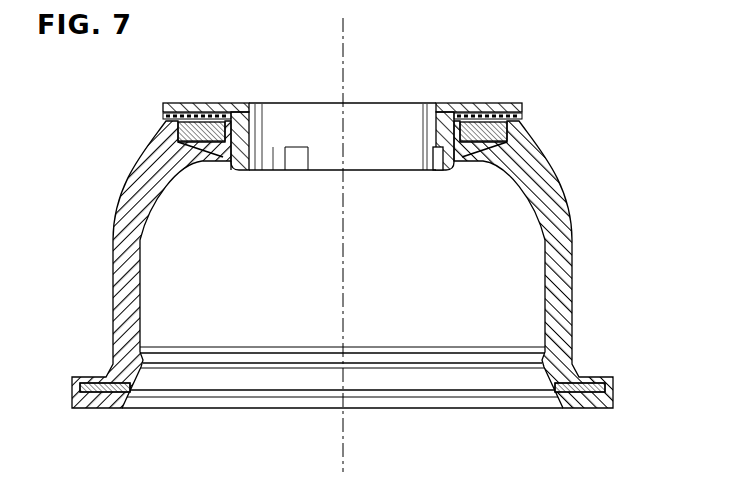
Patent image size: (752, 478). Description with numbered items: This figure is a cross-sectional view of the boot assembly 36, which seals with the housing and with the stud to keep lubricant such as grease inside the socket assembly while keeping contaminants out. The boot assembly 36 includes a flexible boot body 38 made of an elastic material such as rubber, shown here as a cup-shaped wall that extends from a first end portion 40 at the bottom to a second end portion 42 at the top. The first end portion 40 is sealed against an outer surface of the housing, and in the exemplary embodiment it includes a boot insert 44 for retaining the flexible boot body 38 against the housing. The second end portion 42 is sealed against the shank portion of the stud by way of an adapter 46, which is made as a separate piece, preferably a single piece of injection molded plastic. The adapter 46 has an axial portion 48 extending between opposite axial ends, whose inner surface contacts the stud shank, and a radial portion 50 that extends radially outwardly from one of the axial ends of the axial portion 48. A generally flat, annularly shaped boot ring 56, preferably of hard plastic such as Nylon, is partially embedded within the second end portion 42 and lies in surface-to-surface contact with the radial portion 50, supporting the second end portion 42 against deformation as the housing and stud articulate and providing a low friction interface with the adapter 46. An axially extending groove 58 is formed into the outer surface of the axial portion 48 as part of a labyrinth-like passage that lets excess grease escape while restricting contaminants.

The boot assembly 36 is at (362, 246).
The flexible boot body 38 is at (573, 252).
The first end portion 40 is at (593, 408).
The second end portion 42 is at (360, 264).
The boot insert 44 is at (593, 390).
The adapter 46 is at (302, 153).
The axial portion 48 is at (250, 140).
The radial portion 50 is at (197, 102).
The boot ring 56 is at (178, 137).
The axially extending groove 58 is at (233, 168).